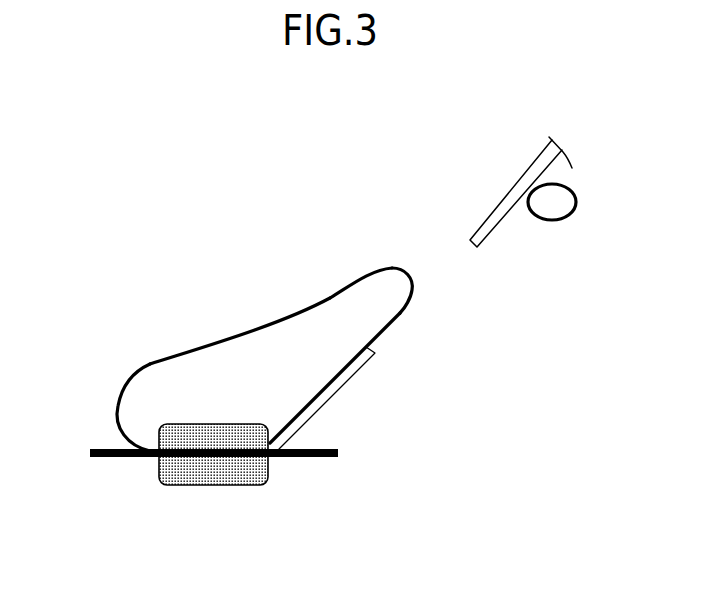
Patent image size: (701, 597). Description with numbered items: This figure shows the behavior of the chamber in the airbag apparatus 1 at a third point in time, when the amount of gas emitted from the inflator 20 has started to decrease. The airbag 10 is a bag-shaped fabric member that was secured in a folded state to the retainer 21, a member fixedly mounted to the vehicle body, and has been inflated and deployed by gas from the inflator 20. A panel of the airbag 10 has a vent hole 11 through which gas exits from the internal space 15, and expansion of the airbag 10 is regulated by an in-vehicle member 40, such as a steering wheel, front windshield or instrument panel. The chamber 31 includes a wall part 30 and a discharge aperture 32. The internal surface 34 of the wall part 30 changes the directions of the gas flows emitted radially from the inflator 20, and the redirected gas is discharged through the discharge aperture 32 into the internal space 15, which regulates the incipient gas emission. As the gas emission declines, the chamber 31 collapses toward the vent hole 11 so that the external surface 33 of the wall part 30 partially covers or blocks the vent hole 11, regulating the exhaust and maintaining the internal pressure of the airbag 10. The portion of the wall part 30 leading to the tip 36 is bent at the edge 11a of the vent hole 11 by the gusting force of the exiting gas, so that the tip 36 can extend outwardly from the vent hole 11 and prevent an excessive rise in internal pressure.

The airbag apparatus 1 is at (136, 155).
The airbag 10 is at (493, 235).
The vent hole 11 is at (416, 368).
The edge of the vent hole 11a is at (380, 338).
The internal space 15 is at (258, 245).
The inflator 20 is at (217, 478).
The retainer 21 is at (302, 459).
The wall part 30 is at (252, 321).
The chamber 31 is at (127, 364).
The discharge aperture 32 is at (283, 345).
The external surface 33 is at (395, 320).
The internal surface 34 is at (333, 316).
The tip 36 is at (408, 262).
The in-vehicle member 40 is at (573, 217).